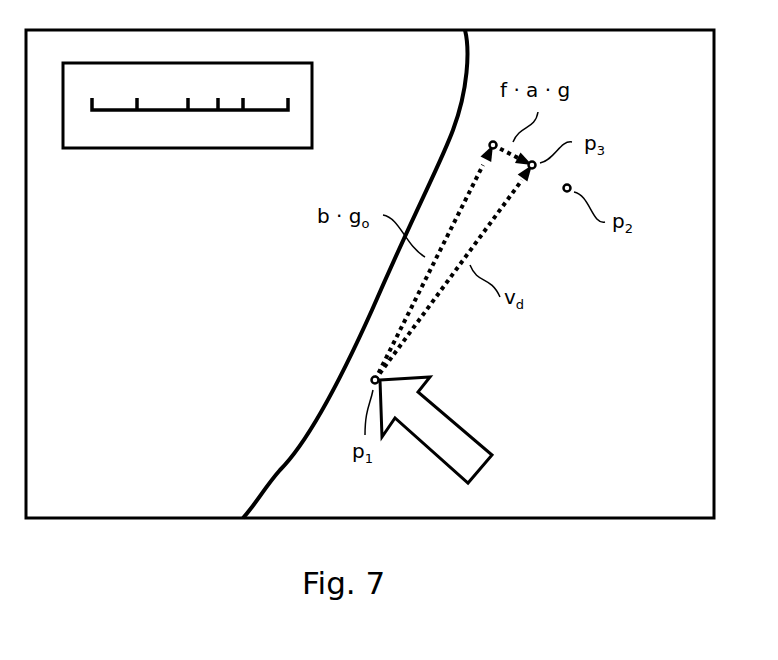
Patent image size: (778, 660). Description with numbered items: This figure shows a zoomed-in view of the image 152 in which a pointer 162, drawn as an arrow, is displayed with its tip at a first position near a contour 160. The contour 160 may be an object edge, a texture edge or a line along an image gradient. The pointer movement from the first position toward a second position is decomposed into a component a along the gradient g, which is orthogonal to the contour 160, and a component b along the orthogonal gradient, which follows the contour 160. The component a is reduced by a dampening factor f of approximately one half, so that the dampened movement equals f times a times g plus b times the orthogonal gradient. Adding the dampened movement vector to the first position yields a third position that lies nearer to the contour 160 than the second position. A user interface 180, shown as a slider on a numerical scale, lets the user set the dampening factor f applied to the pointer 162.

The image 152 is at (617, 519).
The contour 160 is at (312, 405).
The pointer 162 is at (462, 420).
The user interface 180 is at (192, 152).